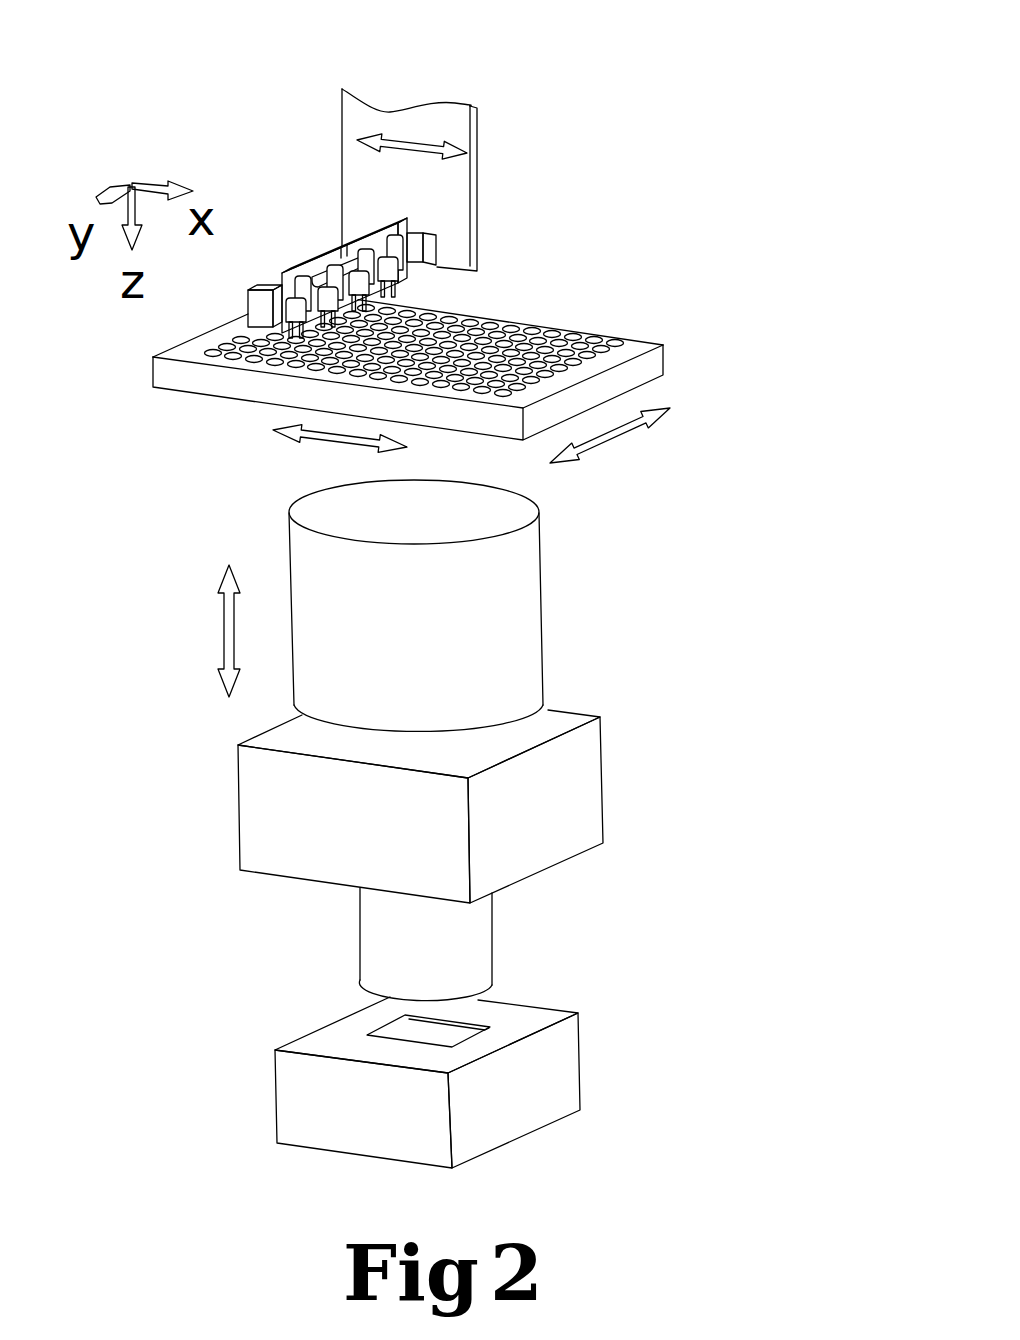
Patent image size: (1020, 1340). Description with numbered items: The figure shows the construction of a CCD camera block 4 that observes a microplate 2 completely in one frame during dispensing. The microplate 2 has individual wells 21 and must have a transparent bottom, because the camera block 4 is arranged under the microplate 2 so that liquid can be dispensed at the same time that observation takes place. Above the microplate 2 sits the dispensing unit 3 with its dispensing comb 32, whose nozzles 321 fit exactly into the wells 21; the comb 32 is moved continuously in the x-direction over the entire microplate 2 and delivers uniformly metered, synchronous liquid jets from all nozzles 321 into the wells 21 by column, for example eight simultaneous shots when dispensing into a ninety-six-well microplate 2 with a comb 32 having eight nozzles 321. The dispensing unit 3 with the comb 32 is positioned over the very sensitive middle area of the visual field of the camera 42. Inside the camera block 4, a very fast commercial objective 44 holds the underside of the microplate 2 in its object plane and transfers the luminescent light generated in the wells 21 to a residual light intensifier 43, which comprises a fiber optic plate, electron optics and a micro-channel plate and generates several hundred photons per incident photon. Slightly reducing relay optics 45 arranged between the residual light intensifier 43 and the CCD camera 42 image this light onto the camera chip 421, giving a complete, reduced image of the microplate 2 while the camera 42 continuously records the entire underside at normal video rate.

The microplate 2 is at (450, 293).
The wells 21 is at (615, 338).
The dispensing unit 3 is at (478, 128).
The dispensing comb 32 is at (343, 169).
The dispensing nozzles 321 is at (400, 297).
The CCD camera block 4 is at (447, 824).
The CCD camera 42 is at (536, 1047).
The camera chip 421 is at (467, 1027).
The residual light intensifier 43 is at (578, 767).
The objective 44 is at (525, 647).
The relay optics 45 is at (473, 938).